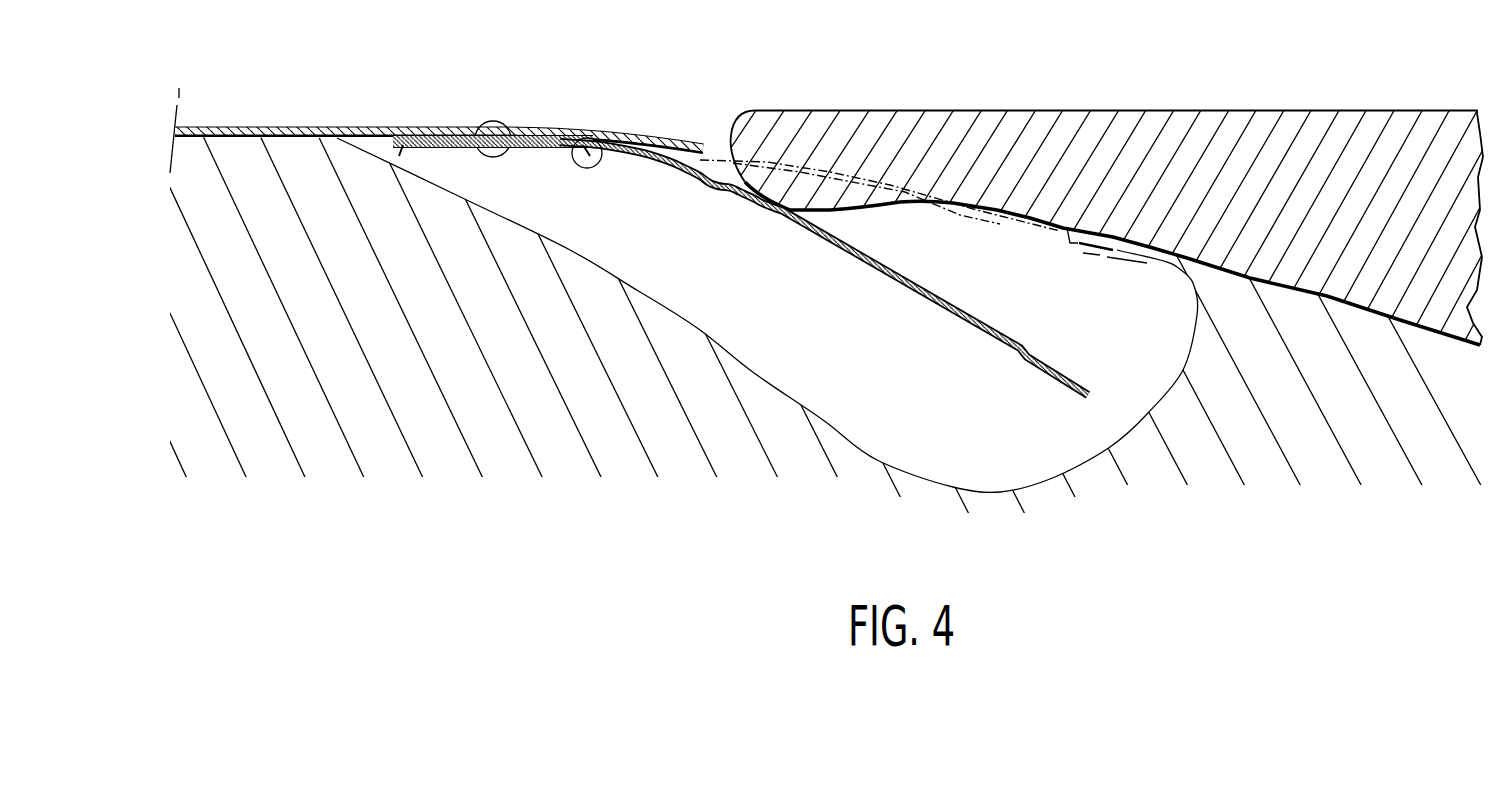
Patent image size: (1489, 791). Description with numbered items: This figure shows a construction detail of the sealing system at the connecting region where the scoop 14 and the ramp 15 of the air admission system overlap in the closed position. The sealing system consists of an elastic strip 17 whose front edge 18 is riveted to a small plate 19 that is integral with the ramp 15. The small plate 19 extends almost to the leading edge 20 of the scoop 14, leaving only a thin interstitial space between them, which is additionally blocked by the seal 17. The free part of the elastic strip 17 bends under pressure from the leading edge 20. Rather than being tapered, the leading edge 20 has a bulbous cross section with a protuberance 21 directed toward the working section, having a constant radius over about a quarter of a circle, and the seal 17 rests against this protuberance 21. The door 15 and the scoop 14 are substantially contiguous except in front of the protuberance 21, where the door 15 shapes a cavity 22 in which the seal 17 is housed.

The scoop 14 is at (1265, 108).
The ramp 15 is at (203, 177).
The elastic strip 17 is at (1080, 392).
The front edge 18 is at (598, 134).
The small plate 19 is at (383, 128).
The leading edge 20 is at (830, 124).
The protuberance 21 is at (783, 197).
The cavity 22 is at (650, 225).